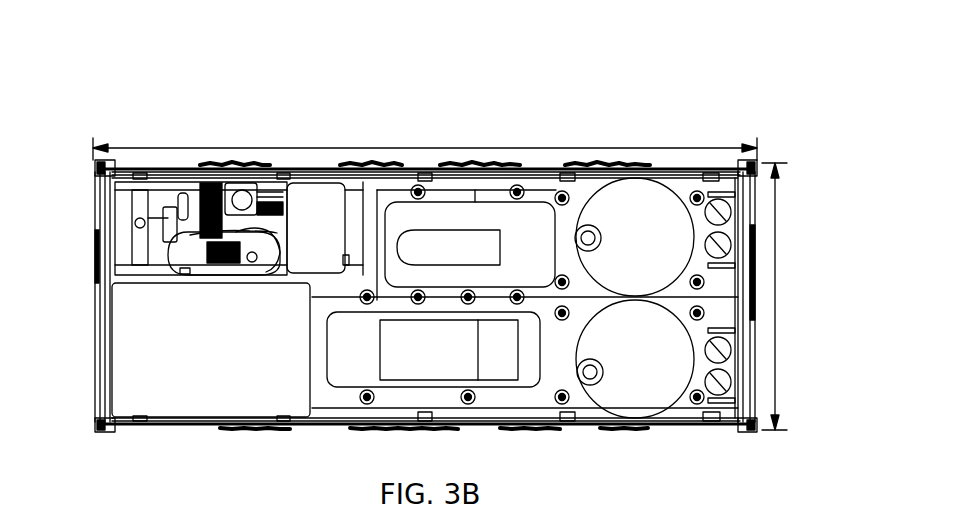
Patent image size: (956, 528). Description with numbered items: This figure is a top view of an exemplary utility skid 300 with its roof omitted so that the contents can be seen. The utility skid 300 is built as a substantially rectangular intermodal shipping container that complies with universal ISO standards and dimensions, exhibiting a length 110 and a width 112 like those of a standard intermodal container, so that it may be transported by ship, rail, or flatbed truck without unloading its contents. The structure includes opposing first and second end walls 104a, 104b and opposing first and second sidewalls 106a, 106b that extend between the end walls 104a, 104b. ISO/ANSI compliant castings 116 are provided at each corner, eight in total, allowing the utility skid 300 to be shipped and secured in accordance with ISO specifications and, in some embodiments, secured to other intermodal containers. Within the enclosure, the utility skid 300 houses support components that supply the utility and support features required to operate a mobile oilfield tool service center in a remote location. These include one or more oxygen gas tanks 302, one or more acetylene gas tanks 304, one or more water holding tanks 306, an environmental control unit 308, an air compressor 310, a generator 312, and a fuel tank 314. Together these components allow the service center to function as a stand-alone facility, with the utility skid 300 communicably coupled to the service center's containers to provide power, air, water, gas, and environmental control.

The utility skid 300 is at (562, 96).
The length 110 is at (457, 148).
The width 112 is at (775, 300).
The castings 116 is at (95, 165).
The first end wall 104a is at (76, 272).
The second end wall 104b is at (762, 244).
The first sidewall 106a is at (254, 156).
The second sidewall 106b is at (284, 436).
The oxygen gas tanks 302 is at (683, 168).
The acetylene gas tanks 304 is at (705, 330).
The water holding tanks 306 is at (620, 244).
The environmental control unit 308 is at (514, 244).
The air compressor 310 is at (412, 358).
The generator 312 is at (328, 238).
The fuel tank 314 is at (219, 353).